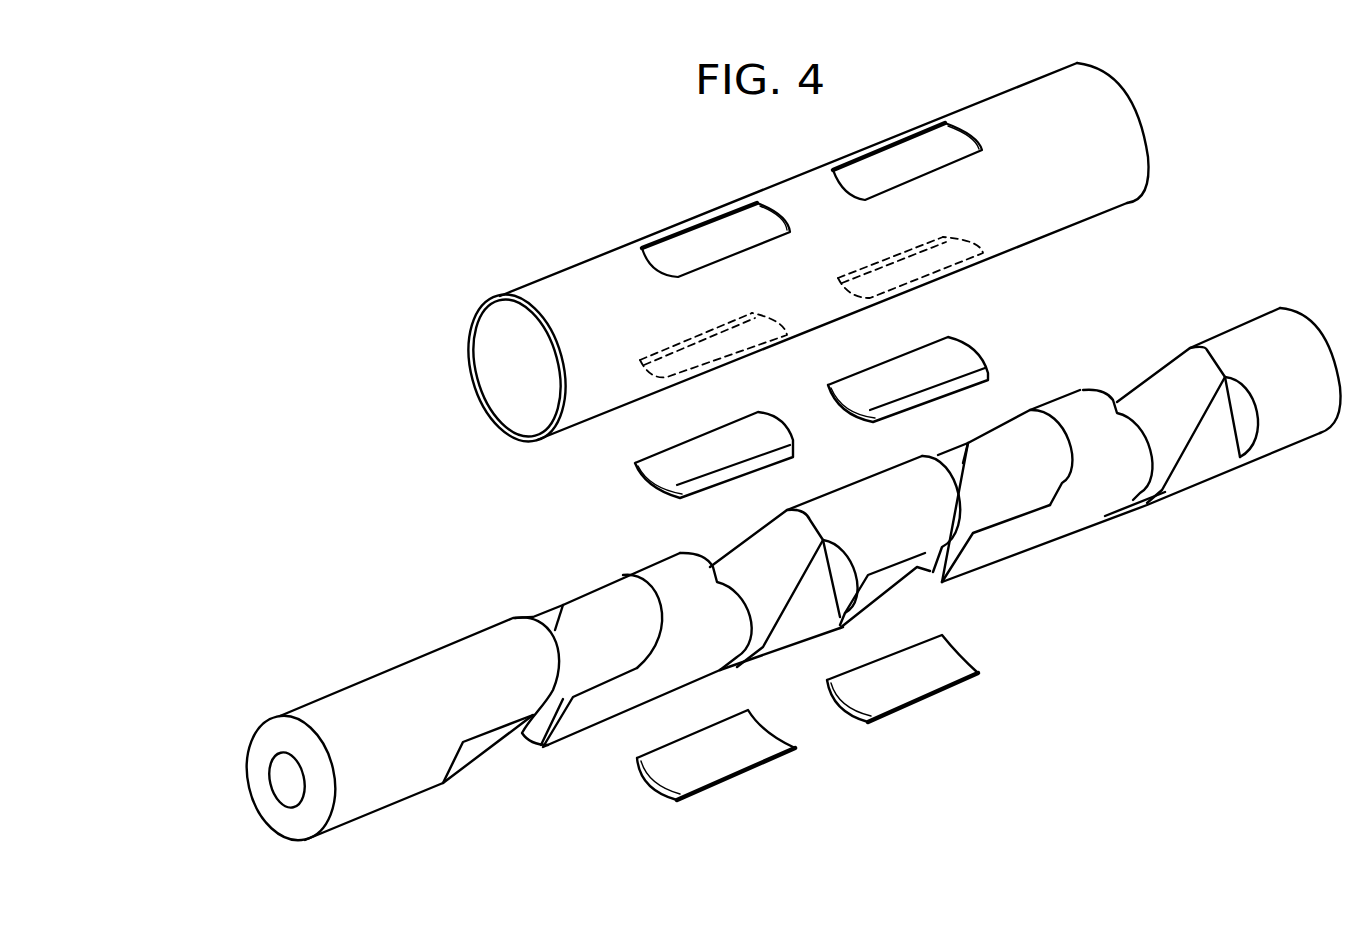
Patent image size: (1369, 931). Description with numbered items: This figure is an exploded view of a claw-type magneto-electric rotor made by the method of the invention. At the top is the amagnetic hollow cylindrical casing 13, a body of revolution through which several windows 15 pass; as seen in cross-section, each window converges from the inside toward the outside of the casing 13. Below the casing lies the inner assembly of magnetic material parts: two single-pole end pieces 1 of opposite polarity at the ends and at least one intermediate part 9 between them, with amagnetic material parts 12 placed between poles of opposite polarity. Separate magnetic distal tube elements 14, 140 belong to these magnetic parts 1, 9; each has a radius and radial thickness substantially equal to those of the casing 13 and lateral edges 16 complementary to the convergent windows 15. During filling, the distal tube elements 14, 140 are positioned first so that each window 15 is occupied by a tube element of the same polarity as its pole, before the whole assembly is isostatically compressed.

The single-pole end piece 1 is at (1243, 338).
The intermediate part 9 is at (860, 493).
The amagnetic material part 12 is at (1077, 408).
The hollow cylindrical casing 13 is at (1142, 106).
The distal tube element 14 is at (668, 478).
The distal tube element 140 is at (953, 352).
The window 15 is at (695, 242).
The lateral edge 16 is at (917, 398).